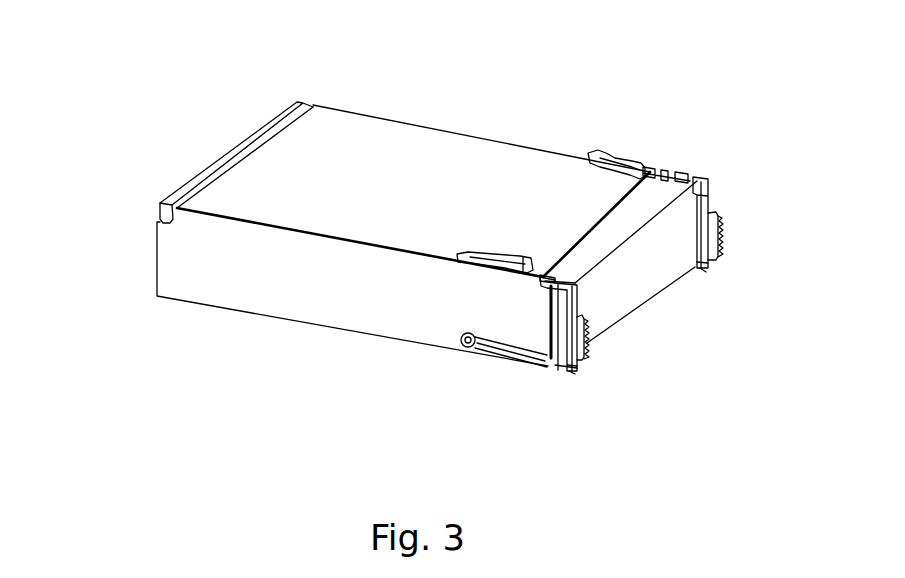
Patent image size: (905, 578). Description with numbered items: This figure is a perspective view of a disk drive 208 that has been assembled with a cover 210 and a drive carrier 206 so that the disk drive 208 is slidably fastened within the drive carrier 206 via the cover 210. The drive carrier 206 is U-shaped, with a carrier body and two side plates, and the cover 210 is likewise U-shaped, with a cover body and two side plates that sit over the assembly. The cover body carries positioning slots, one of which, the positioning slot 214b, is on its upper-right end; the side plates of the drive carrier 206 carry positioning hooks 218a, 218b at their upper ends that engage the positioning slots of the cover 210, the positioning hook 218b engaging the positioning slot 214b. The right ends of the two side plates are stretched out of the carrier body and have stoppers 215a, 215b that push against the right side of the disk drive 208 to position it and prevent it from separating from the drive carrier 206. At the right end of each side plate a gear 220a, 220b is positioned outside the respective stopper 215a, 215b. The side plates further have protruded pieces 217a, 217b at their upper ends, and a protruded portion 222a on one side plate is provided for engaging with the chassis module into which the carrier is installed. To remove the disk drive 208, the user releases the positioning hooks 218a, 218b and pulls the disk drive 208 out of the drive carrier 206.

The drive carrier 206 is at (149, 262).
The disk drive 208 is at (226, 142).
The cover 210 is at (365, 139).
The positioning slot 214b is at (660, 170).
The stopper 215a is at (583, 293).
The stopper 215b is at (710, 192).
The protruded piece 217a is at (555, 282).
The protruded piece 217b is at (695, 178).
The positioning hook 218a is at (495, 272).
The positioning hook 218b is at (630, 162).
The gear 220a is at (571, 366).
The gear 220b is at (710, 275).
The protruded portion 222a is at (466, 348).